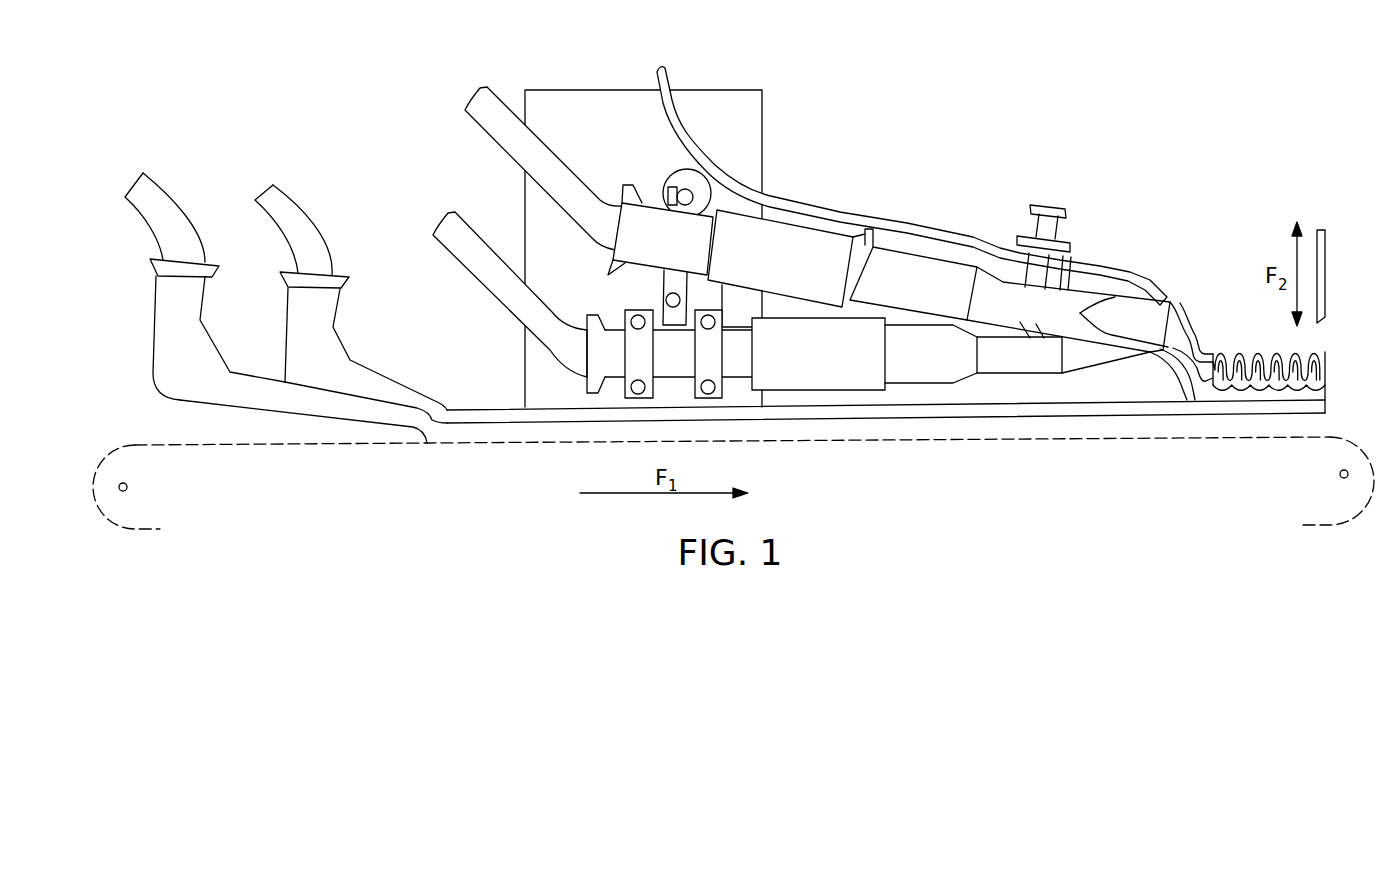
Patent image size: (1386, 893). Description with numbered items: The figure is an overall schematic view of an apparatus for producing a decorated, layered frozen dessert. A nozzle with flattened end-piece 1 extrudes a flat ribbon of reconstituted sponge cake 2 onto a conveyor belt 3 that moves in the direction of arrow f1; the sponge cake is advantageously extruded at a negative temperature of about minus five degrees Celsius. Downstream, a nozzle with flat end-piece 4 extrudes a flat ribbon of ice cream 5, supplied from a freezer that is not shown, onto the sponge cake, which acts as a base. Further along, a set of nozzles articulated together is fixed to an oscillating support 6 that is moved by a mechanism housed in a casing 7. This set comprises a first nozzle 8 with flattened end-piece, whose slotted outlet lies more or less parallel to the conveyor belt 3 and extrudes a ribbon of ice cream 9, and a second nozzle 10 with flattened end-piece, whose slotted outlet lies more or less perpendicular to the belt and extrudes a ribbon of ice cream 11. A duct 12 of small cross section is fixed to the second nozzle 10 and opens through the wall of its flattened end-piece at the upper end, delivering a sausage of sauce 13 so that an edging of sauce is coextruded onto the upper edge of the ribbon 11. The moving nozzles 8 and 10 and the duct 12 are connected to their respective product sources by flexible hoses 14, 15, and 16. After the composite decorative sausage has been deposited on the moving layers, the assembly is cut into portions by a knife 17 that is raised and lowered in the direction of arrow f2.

The nozzle with flattened end-piece 1 is at (165, 357).
The flat ribbon of reconstituted sponge cake 2 is at (443, 432).
The conveyor belt 3 is at (314, 447).
The nozzle with flat end-piece 4 is at (333, 352).
The flat ribbon of ice cream 5 is at (483, 407).
The oscillating support 6 is at (633, 292).
The casing 7 is at (592, 107).
The first nozzle 8 is at (937, 365).
The ribbon of ice cream 9 is at (1168, 365).
The second nozzle 10 is at (933, 273).
The ribbon of ice cream 11 is at (1175, 350).
The duct 12 is at (1097, 268).
The sausage of sauce 13 is at (1174, 306).
The flexible hose 14 is at (475, 275).
The flexible hose 15 is at (488, 86).
The flexible hose 16 is at (668, 72).
The knife 17 is at (1317, 230).